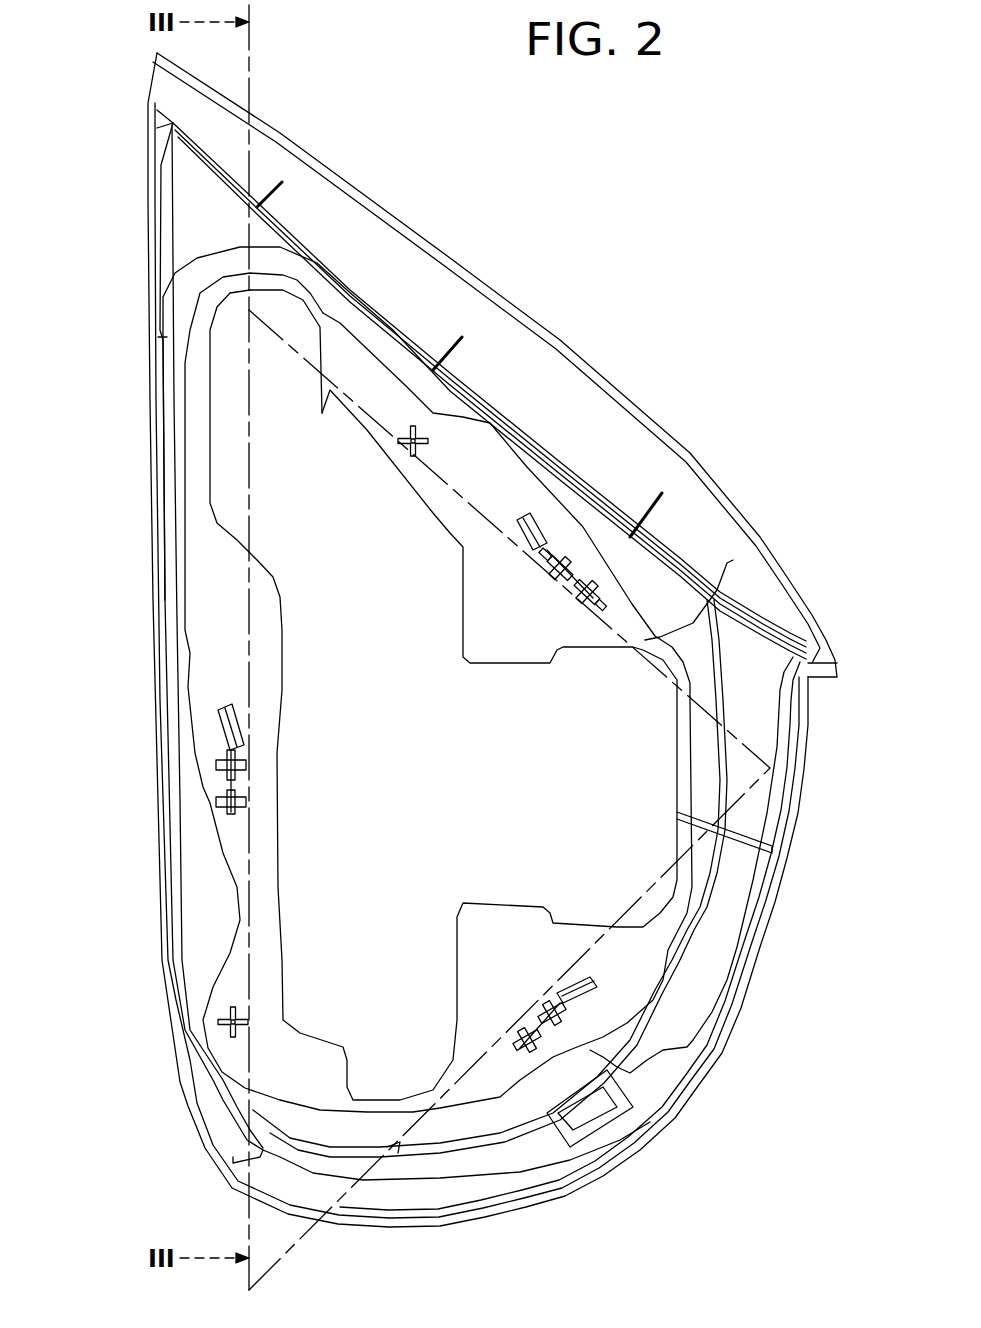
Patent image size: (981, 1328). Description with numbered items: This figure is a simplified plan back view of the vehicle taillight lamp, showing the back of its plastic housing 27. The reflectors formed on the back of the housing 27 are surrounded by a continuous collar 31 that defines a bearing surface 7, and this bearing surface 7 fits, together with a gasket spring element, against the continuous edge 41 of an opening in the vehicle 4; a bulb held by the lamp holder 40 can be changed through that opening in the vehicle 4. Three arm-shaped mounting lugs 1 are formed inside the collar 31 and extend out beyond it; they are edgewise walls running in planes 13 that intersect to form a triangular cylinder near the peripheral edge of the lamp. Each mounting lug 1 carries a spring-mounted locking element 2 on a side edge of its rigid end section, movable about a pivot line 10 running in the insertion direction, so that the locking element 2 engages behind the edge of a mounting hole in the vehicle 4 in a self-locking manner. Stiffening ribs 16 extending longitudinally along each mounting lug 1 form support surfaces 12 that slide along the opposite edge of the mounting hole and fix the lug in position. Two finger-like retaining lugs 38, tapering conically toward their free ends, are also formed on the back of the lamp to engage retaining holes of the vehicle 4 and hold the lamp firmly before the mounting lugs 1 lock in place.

The mounting lug 1 is at (620, 568).
The locking element 2 is at (538, 535).
The vehicle 4 is at (667, 633).
The bearing surface 7 is at (697, 925).
The pivot line 10 is at (583, 525).
The support surface 12 is at (247, 803).
The plane 13 is at (248, 1232).
The stiffening rib 16 is at (573, 1033).
The housing 27 is at (218, 913).
The collar 31 is at (713, 668).
The retaining lug 38 is at (418, 441).
The lamp holder 40 is at (295, 320).
The continuous edge 41 is at (285, 620).